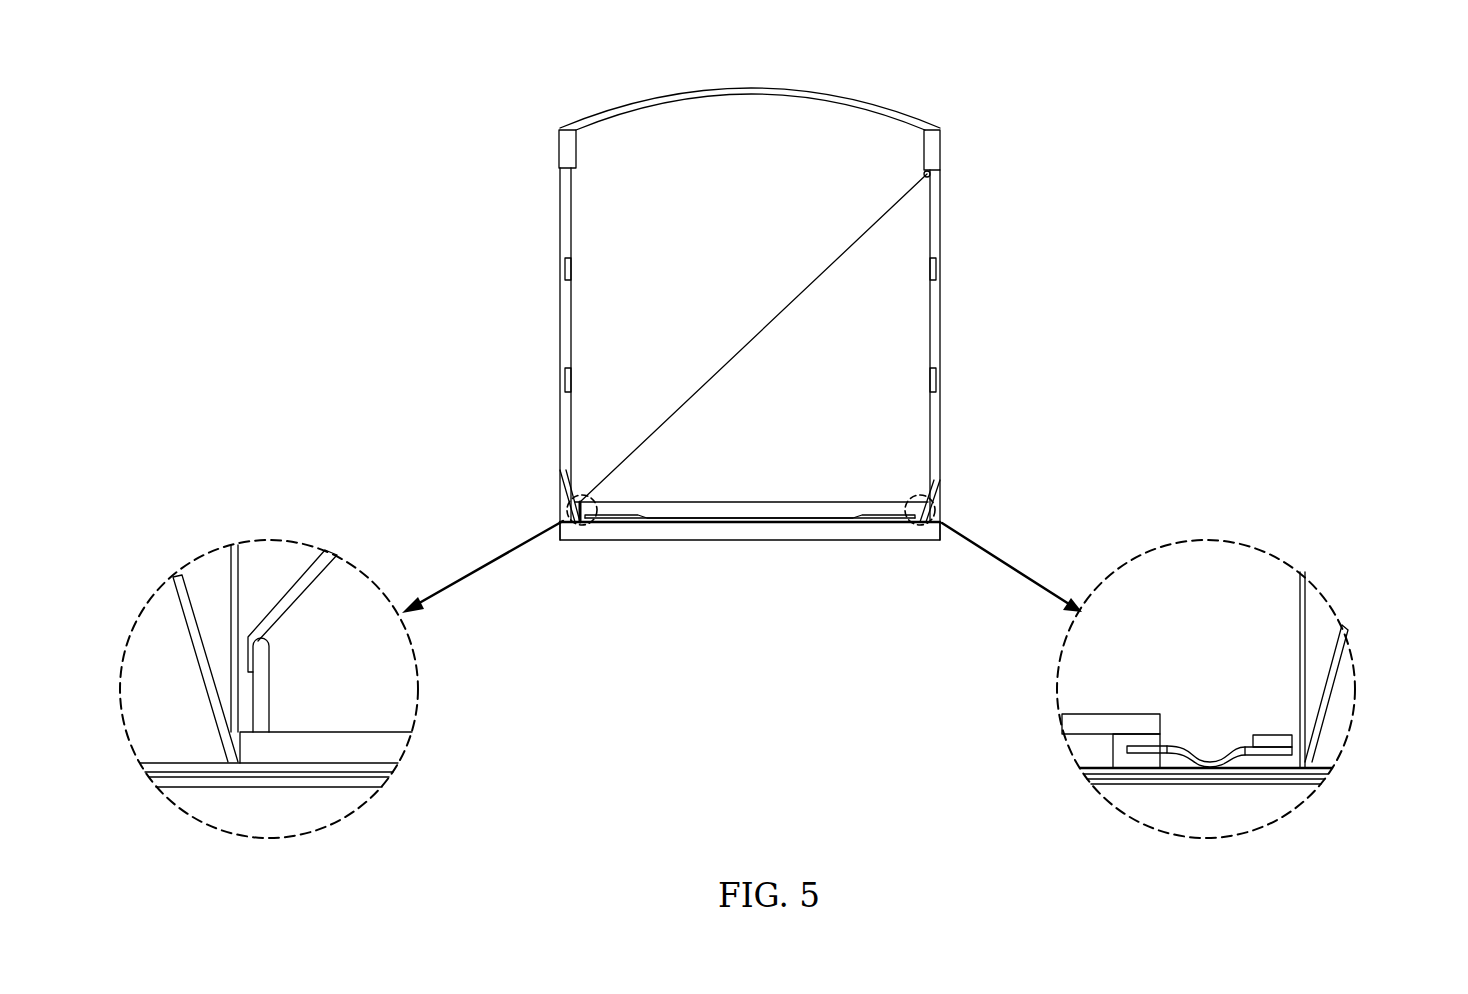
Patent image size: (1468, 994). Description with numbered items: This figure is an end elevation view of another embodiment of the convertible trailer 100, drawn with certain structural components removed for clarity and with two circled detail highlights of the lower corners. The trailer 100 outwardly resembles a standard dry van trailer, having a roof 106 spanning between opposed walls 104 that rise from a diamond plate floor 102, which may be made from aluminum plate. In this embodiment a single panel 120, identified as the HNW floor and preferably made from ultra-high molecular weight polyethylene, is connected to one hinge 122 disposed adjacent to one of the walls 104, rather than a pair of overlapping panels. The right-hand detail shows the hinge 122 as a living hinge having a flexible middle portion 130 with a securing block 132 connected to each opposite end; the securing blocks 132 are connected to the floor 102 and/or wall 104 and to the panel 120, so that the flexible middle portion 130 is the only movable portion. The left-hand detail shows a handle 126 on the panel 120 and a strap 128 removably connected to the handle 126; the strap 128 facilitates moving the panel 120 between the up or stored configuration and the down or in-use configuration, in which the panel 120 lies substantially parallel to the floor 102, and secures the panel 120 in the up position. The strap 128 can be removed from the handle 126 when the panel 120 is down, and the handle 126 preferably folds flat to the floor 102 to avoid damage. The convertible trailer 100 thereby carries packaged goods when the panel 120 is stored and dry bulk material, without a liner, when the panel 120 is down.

The convertible trailer 100 is at (470, 93).
The floor 102 is at (750, 540).
The wall 104 is at (560, 330).
The roof 106 is at (750, 88).
The panel 120 is at (397, 742).
The hinge 122 is at (1228, 706).
The handle 126 is at (270, 690).
The strap 128 is at (752, 342).
The flexible middle portion 130 is at (1207, 757).
The securing block 132 is at (1278, 735).